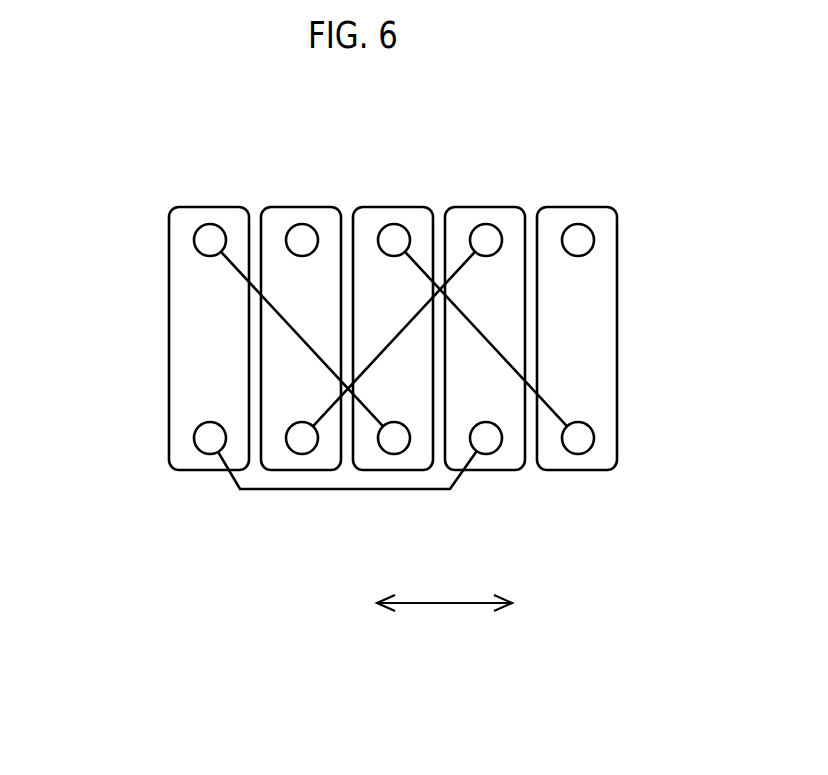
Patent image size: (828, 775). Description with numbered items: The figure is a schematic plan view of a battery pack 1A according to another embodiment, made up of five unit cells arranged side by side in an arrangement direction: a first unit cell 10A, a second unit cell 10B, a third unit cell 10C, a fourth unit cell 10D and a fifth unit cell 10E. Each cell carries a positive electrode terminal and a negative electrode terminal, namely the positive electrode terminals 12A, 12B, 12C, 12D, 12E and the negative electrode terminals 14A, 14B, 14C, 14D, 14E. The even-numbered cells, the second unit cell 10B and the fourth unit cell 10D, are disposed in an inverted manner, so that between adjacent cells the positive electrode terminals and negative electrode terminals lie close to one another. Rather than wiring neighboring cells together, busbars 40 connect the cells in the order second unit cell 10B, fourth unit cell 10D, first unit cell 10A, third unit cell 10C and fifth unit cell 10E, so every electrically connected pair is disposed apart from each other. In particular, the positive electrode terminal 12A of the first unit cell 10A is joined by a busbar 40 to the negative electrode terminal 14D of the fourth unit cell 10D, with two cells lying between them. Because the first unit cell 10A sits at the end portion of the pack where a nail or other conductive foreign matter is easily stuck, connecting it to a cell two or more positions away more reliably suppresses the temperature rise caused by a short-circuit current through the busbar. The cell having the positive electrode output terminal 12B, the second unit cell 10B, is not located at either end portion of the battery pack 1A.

The battery pack 1A is at (98, 136).
The first unit cell 10A is at (215, 206).
The second unit cell 10B is at (308, 206).
The third unit cell 10C is at (400, 206).
The fourth unit cell 10D is at (492, 206).
The fifth unit cell 10E is at (583, 206).
The positive electrode terminal 12A is at (195, 442).
The positive electrode terminal 12B is at (290, 228).
The positive electrode terminal 12C is at (395, 454).
The positive electrode terminal 12D is at (475, 228).
The positive electrode terminal 12E is at (578, 454).
The negative electrode terminal 14A is at (194, 240).
The negative electrode terminal 14B is at (302, 454).
The negative electrode terminal 14C is at (383, 228).
The negative electrode terminal 14D is at (492, 452).
The negative electrode terminal 14E is at (567, 228).
The busbar 40 is at (237, 273).